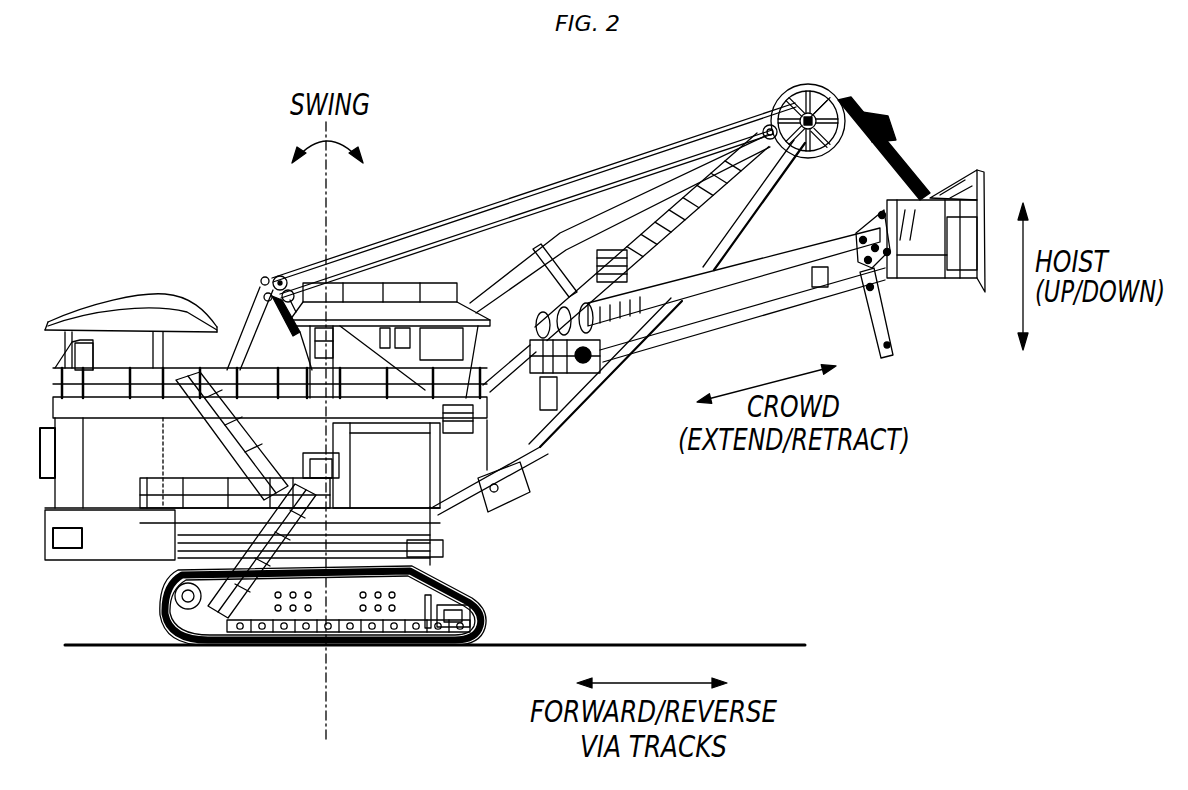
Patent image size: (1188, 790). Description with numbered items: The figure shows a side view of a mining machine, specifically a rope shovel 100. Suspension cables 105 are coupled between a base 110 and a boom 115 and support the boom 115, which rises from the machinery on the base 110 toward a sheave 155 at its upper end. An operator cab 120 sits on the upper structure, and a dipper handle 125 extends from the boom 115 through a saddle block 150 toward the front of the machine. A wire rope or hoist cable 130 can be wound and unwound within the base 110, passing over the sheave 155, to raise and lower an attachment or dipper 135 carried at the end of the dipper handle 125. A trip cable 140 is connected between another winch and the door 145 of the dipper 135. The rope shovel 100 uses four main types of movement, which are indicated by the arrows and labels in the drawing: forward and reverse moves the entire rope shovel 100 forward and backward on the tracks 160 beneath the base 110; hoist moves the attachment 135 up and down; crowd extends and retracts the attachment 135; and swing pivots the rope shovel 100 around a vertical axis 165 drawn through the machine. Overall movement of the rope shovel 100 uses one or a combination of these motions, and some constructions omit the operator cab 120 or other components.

The rope shovel 100 is at (100, 183).
The suspension cables 105 is at (421, 226).
The base 110 is at (106, 485).
The boom 115 is at (787, 173).
The operator cab 120 is at (438, 302).
The dipper handle 125 is at (750, 262).
The hoist cable 130 is at (753, 108).
The dipper 135 is at (928, 210).
The trip cable 140 is at (683, 337).
The door 145 is at (890, 322).
The saddle block 150 is at (541, 352).
The sheave 155 is at (833, 82).
The tracks 160 is at (487, 610).
The axis 165 is at (322, 681).